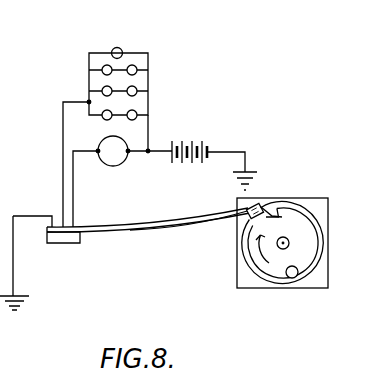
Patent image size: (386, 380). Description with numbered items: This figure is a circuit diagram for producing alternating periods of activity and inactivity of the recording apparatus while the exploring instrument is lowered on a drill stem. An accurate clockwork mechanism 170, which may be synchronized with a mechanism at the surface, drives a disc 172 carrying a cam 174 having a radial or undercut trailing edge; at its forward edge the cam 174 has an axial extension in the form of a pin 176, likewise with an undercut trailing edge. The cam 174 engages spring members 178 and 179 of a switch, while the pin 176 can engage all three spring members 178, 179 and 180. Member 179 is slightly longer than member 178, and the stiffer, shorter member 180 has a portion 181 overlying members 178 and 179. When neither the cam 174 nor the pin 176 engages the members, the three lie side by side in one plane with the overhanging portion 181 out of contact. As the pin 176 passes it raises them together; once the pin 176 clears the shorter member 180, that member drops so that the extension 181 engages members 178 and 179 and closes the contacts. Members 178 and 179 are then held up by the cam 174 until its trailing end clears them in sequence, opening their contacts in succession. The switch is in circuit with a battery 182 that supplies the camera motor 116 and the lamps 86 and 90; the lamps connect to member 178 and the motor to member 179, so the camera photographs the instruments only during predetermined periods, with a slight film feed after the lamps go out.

The lamp 90 is at (120, 48).
The lamps 86 is at (134, 113).
The camera motor 116 is at (110, 166).
The battery 182 is at (199, 132).
The spring member 178 is at (203, 218).
The spring member 180 is at (224, 226).
The overhanging portion 181 is at (249, 211).
The spring member 179 is at (262, 205).
The clockwork mechanism 170 is at (328, 214).
The disc 172 is at (322, 267).
The cam 174 is at (316, 248).
The pin 176 is at (292, 278).